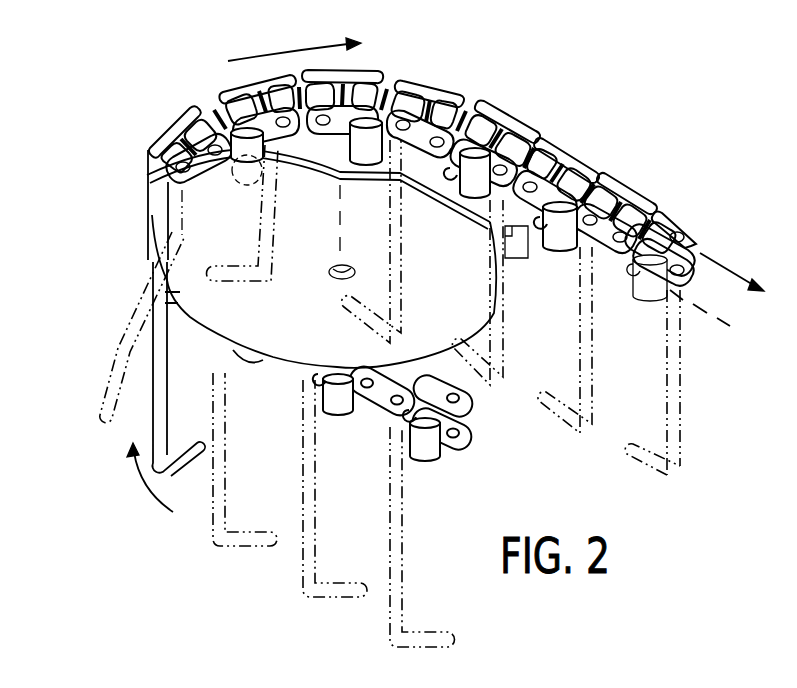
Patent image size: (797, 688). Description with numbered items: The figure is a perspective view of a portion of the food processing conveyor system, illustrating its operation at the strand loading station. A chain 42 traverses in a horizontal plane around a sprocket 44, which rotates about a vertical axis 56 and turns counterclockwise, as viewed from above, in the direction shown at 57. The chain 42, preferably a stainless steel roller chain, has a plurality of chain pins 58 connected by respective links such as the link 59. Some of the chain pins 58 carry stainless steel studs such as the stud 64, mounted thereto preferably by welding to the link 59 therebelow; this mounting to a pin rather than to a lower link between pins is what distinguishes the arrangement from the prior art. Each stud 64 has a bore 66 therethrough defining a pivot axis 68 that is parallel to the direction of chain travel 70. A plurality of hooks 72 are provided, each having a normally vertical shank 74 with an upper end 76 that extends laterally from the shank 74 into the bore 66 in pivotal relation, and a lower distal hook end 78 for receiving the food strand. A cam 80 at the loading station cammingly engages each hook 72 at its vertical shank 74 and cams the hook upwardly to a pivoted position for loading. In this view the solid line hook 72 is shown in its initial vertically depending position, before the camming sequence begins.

The chain 42 is at (527, 131).
The sprocket 44 is at (525, 248).
The vertical axis 56 is at (341, 223).
The counterclockwise rotation 57 is at (323, 36).
The chain pins 58 is at (632, 193).
The link 59 is at (584, 160).
The stud 64 is at (650, 300).
The bore 66 is at (640, 284).
The pivot axis 68 is at (703, 304).
The direction of chain travel 70 is at (742, 266).
The hook 72 is at (153, 430).
The vertical shank 74 is at (680, 396).
The upper end 76 is at (632, 270).
The lower distal hook end 78 is at (645, 477).
The cam 80 is at (150, 173).